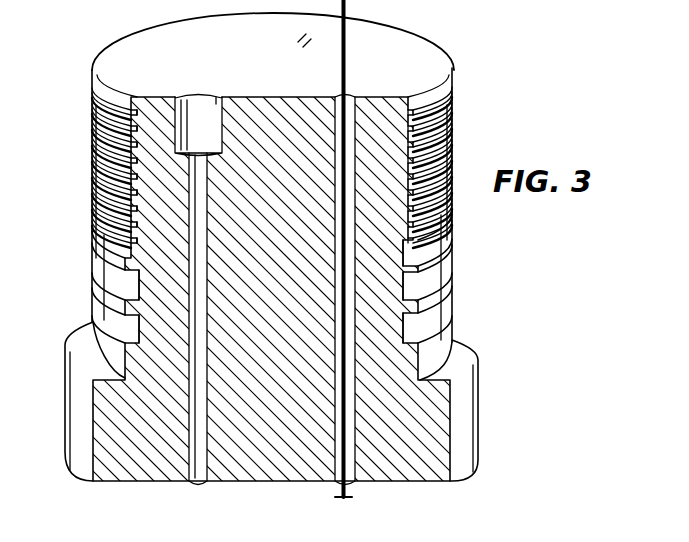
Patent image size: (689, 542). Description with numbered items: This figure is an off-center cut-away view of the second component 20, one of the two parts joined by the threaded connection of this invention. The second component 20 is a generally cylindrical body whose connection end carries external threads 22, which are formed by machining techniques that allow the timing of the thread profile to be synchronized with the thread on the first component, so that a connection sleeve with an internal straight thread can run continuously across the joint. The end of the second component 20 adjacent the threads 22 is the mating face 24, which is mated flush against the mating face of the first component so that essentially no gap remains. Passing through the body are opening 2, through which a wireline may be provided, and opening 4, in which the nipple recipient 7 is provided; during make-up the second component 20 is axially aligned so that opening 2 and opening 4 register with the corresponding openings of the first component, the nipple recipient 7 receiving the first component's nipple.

The opening 2 is at (348, 273).
The opening 4 is at (197, 273).
The nipple recipient 7 is at (182, 95).
The second component 20 is at (433, 430).
The threads 22 is at (104, 110).
The mating face 24 is at (392, 39).